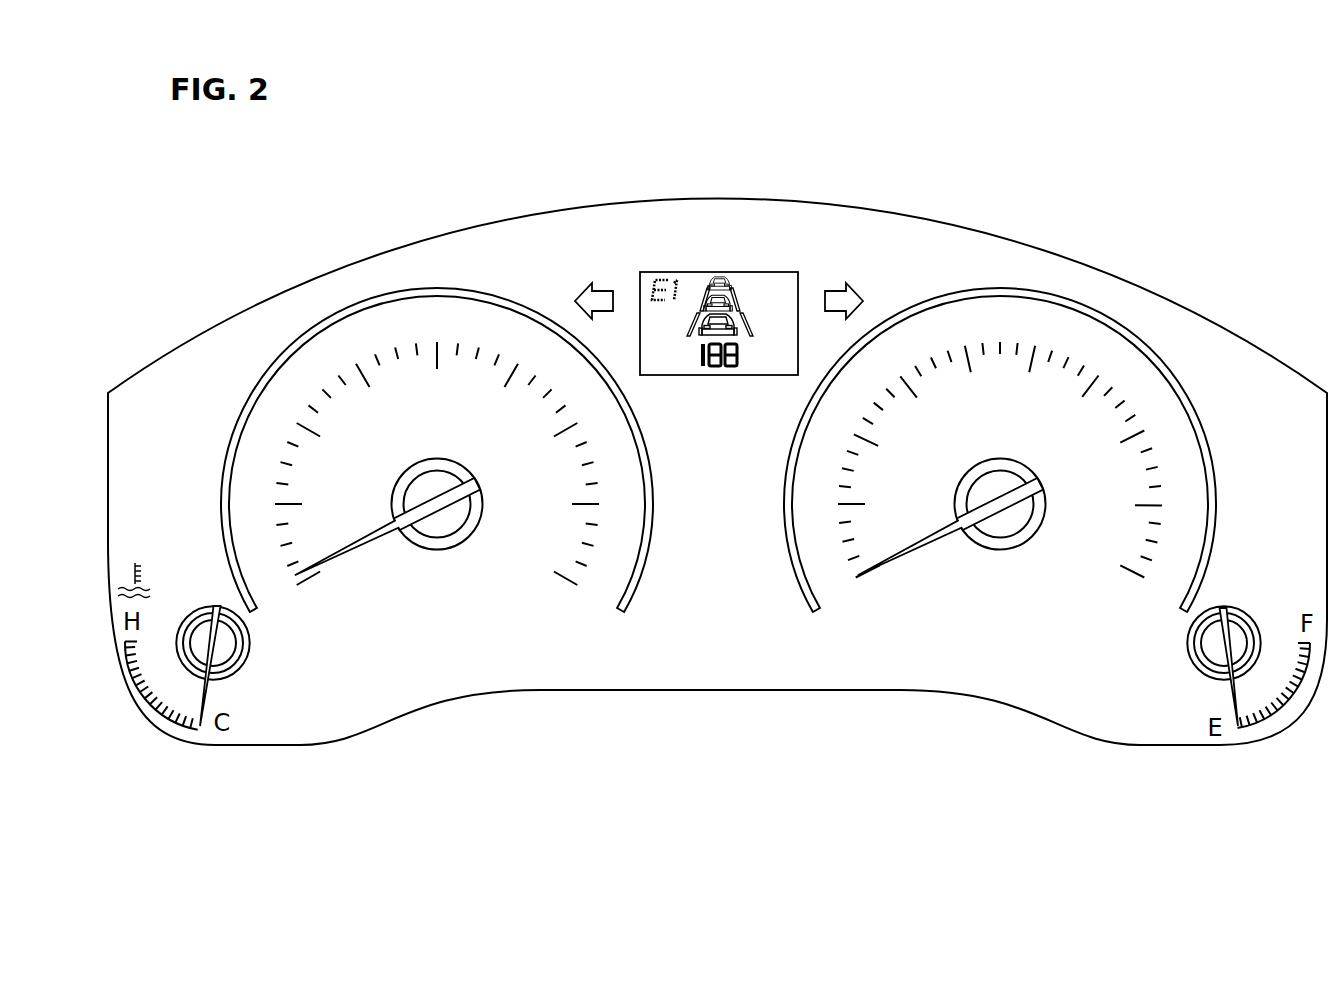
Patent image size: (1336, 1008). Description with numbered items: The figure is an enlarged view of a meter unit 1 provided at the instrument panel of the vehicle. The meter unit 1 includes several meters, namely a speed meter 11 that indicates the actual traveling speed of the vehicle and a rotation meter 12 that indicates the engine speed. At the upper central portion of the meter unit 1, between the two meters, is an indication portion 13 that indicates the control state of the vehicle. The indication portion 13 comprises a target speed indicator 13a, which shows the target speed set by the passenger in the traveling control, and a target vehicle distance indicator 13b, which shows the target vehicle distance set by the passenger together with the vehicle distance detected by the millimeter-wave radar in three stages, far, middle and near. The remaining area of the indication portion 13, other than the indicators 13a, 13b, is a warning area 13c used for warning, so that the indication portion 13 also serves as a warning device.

The meter unit 1 is at (943, 197).
The speed meter 11 is at (1113, 312).
The rotation meter 12 is at (425, 283).
The indication portion 13 is at (707, 262).
The target speed indicator 13a is at (721, 367).
The target vehicle distance indicator 13b is at (752, 300).
The warning area 13c is at (658, 330).